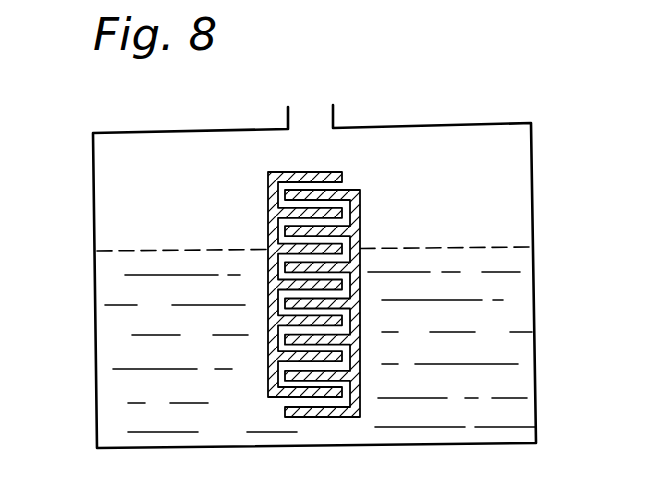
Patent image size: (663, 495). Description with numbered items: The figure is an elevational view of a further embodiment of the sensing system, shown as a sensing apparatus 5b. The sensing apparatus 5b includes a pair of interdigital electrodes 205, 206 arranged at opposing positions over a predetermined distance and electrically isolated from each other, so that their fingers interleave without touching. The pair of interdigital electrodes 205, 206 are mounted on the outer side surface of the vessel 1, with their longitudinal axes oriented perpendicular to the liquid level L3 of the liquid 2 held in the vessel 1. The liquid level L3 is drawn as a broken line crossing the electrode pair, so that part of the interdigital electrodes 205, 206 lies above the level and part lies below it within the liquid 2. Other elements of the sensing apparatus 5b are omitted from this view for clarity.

The vessel 1 is at (416, 127).
The liquid 2 is at (518, 317).
The liquid level L3 is at (315, 219).
The interdigital electrode 205 is at (272, 397).
The interdigital electrode 206 is at (328, 417).
The sensing apparatus 5b is at (381, 459).